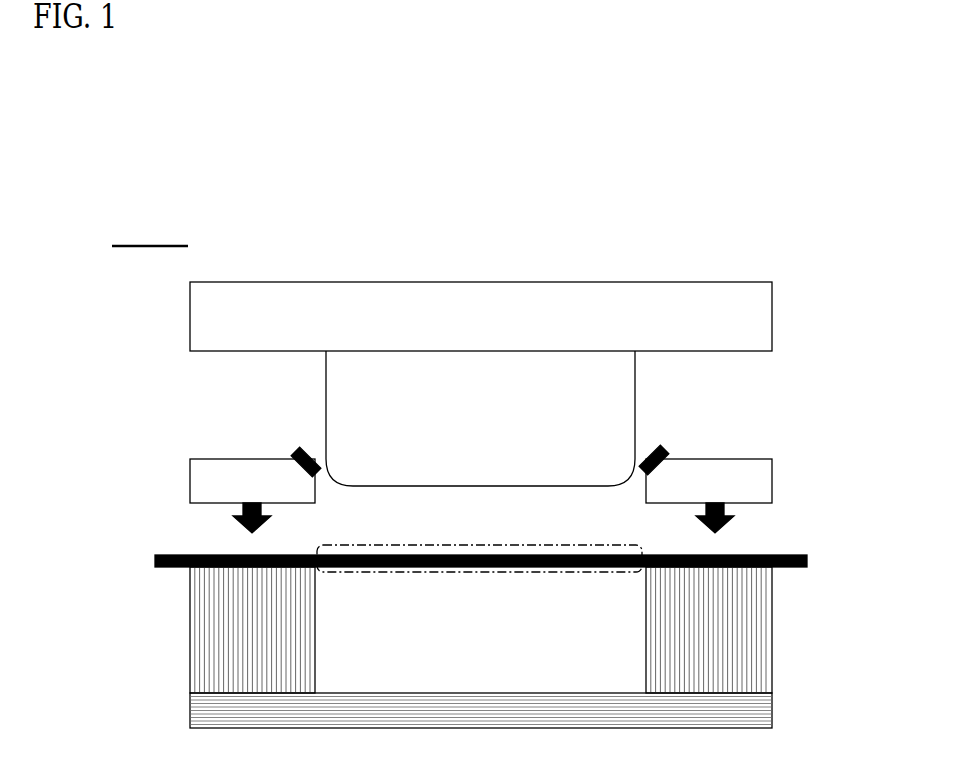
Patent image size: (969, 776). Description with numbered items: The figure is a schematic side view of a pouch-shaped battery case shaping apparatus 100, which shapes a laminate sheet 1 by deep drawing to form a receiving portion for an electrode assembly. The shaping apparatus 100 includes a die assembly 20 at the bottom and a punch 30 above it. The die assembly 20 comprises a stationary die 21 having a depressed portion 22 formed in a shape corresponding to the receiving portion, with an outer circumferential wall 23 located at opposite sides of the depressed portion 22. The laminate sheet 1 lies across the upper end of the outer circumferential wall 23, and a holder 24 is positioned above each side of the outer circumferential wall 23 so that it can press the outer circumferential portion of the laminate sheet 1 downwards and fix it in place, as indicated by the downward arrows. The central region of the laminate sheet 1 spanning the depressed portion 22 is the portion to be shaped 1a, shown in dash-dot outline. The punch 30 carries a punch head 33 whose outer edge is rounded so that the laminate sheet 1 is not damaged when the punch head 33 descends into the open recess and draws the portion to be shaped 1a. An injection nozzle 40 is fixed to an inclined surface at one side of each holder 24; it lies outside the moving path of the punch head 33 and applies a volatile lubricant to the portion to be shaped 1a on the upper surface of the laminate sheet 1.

The shaping apparatus 100 is at (150, 224).
The punch 30 is at (533, 384).
The punch head 33 is at (558, 412).
The injection nozzle 40 is at (296, 450).
The holder 24 is at (190, 471).
The laminate sheet 1 is at (155, 560).
The portion to be shaped 1a is at (472, 576).
The die assembly 20 is at (492, 654).
The outer circumferential wall 23 is at (208, 615).
The die 21 is at (163, 693).
The depressed portion 22 is at (575, 670).